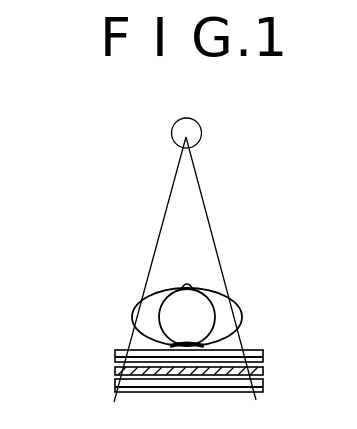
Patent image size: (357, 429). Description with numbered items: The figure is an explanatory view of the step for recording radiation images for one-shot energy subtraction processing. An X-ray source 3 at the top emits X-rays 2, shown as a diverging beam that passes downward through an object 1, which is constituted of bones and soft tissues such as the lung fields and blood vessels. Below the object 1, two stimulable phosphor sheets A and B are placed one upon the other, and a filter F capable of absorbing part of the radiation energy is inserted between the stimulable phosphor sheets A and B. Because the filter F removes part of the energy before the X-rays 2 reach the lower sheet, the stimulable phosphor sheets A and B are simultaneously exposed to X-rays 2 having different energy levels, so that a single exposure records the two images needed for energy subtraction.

The X-ray source 3 is at (201, 134).
The X-rays 2 is at (210, 228).
The object 1 is at (223, 313).
The stimulable phosphor sheet A is at (264, 357).
The filter F is at (114, 371).
The stimulable phosphor sheet B is at (264, 388).